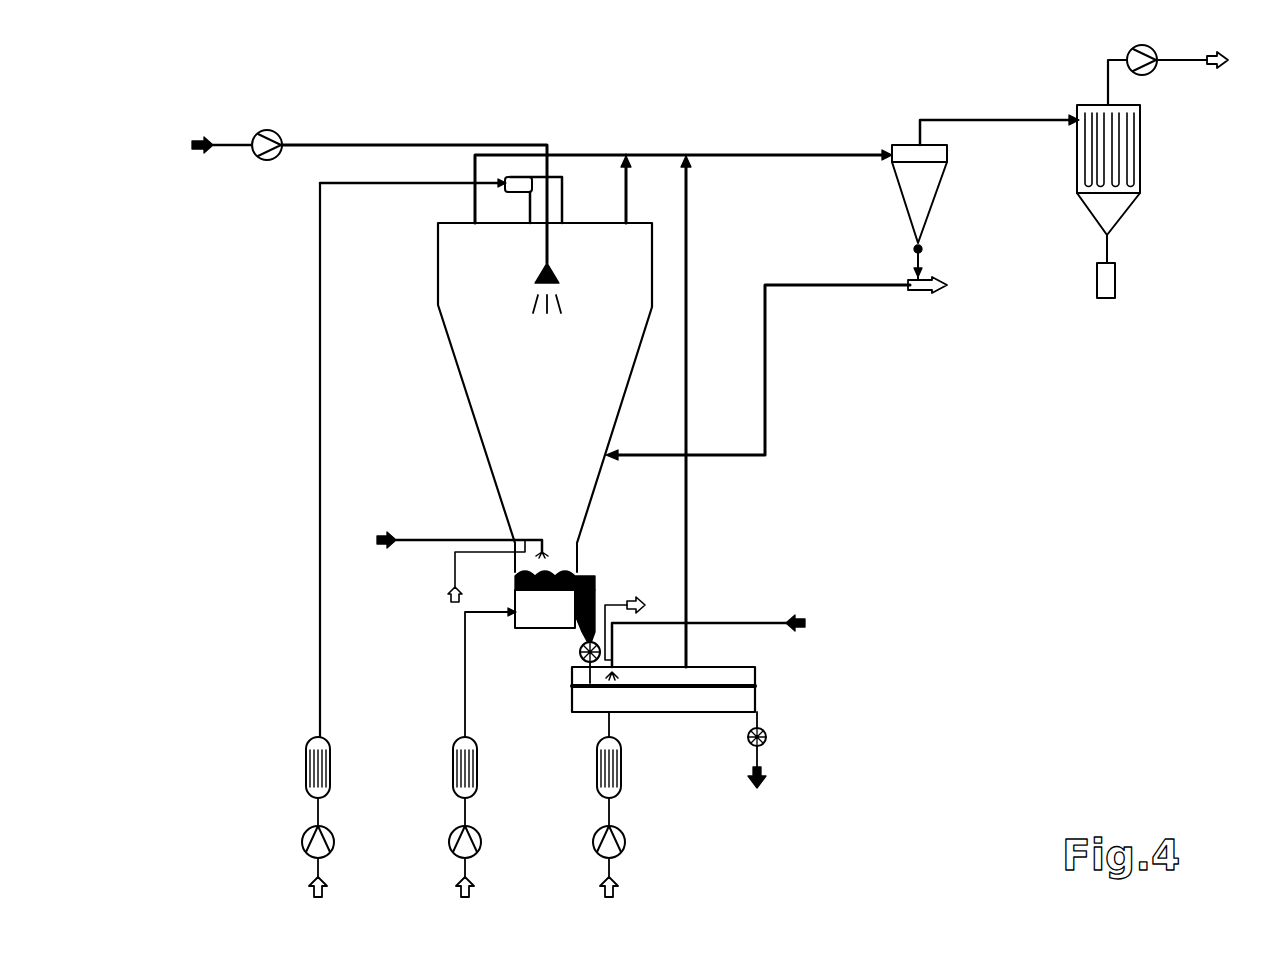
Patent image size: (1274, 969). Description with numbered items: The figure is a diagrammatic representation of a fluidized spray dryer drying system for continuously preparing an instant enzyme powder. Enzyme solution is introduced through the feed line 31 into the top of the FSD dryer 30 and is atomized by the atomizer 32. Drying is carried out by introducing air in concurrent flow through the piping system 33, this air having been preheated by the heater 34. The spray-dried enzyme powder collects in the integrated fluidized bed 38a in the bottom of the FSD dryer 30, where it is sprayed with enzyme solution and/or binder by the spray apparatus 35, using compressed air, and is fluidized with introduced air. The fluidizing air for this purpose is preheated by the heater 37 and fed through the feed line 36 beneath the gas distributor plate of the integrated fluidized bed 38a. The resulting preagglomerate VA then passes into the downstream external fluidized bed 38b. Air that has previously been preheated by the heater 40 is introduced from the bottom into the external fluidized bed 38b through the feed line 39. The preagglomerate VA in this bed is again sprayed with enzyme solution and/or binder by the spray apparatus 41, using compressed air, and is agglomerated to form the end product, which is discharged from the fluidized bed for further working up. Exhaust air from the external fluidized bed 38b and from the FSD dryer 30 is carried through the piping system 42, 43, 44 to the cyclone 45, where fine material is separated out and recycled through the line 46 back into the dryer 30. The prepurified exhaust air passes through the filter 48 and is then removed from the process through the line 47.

The FSD dryer 30 is at (458, 372).
The feed line 31 is at (367, 140).
The atomizer 32 is at (527, 278).
The piping system 33 is at (318, 478).
The heater 34 is at (313, 772).
The spray apparatus 35 is at (437, 540).
The feed line 36 is at (467, 680).
The heater 37 is at (473, 767).
The integrated fluidized bed 38a is at (542, 608).
The external fluidized bed 38b is at (713, 678).
The feed line 39 is at (622, 720).
The heater 40 is at (618, 770).
The spray apparatus 41 is at (723, 623).
The piping system 42 is at (683, 190).
The piping system 43 is at (626, 190).
The piping system 44 is at (762, 153).
The cyclone 45 is at (917, 198).
The line 46 is at (828, 288).
The line 47 is at (968, 120).
The filter 48 is at (1107, 207).
The preagglomerate VA is at (553, 572).